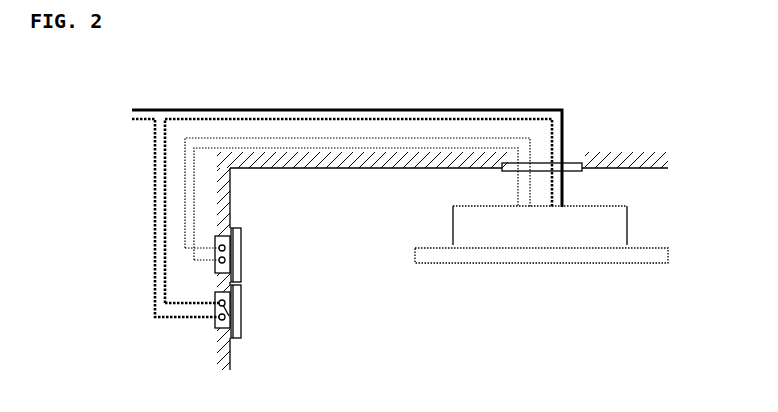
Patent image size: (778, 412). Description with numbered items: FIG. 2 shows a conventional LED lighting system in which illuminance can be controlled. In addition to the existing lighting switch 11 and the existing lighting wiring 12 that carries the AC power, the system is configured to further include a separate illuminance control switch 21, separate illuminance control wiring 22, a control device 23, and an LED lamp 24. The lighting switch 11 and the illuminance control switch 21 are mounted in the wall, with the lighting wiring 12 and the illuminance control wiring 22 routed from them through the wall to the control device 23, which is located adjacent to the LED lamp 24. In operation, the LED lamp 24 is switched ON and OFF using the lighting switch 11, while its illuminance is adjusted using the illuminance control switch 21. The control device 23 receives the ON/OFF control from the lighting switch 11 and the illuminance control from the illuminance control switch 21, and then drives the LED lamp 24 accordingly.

The existing lighting wiring 12 is at (255, 108).
The illuminance control wiring 22 is at (349, 137).
The illuminance control switch 21 is at (243, 259).
The lighting switch 11 is at (243, 319).
The control device 23 is at (627, 206).
The LED lamp 24 is at (488, 263).